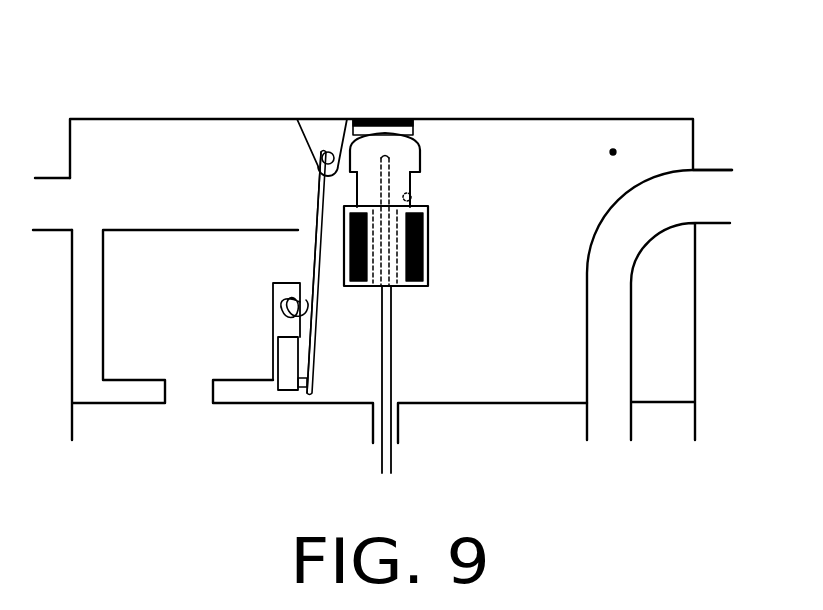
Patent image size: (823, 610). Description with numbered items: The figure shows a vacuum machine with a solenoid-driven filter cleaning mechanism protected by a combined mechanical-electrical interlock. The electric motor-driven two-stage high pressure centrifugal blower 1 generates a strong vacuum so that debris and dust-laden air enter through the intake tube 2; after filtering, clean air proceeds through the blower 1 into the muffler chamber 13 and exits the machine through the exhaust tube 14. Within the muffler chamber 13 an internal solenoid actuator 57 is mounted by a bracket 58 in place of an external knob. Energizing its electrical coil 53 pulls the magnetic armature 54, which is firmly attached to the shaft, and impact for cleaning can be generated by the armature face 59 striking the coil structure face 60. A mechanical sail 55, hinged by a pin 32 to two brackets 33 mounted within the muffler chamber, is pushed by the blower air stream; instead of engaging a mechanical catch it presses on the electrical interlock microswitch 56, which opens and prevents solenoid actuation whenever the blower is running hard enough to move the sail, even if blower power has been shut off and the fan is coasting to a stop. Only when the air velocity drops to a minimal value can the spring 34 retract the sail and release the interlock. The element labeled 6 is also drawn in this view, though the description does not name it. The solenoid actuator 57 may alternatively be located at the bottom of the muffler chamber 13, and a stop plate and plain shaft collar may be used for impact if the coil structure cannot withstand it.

The two-stage high pressure centrifugal blower 1 is at (108, 229).
The intake tube 2 is at (713, 168).
The inner tube 6 is at (697, 325).
The muffler chamber 13 is at (613, 152).
The exhaust tube 14 is at (38, 178).
The pin 32 is at (326, 150).
The brackets 33 is at (303, 136).
The spring 34 is at (300, 302).
The electrical coil 53 is at (357, 286).
The magnetic armature 54 is at (420, 162).
The mechanical sail 55 is at (316, 200).
The microswitch 56 is at (278, 392).
The solenoid actuator 57 is at (428, 237).
The bracket 58 is at (413, 188).
The armature face 59 is at (413, 182).
The coil structure face 60 is at (418, 197).